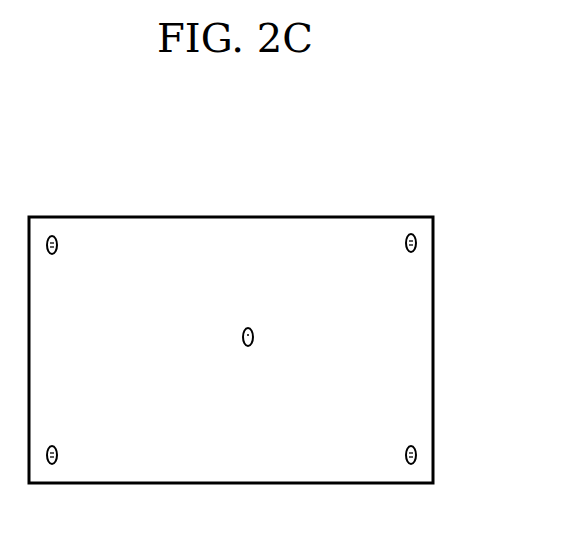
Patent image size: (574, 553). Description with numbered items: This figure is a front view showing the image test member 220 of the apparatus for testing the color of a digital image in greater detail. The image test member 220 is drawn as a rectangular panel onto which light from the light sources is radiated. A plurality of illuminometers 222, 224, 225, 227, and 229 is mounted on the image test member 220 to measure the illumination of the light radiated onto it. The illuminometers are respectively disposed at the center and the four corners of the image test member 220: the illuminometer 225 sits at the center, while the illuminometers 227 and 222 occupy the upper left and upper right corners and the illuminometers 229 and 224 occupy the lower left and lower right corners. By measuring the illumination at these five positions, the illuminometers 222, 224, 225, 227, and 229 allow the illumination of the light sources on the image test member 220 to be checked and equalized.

The image test member 220 is at (358, 143).
The illuminometer 222 is at (411, 234).
The illuminometer 224 is at (411, 464).
The illuminometer 225 is at (252, 328).
The illuminometer 227 is at (53, 236).
The illuminometer 229 is at (52, 464).